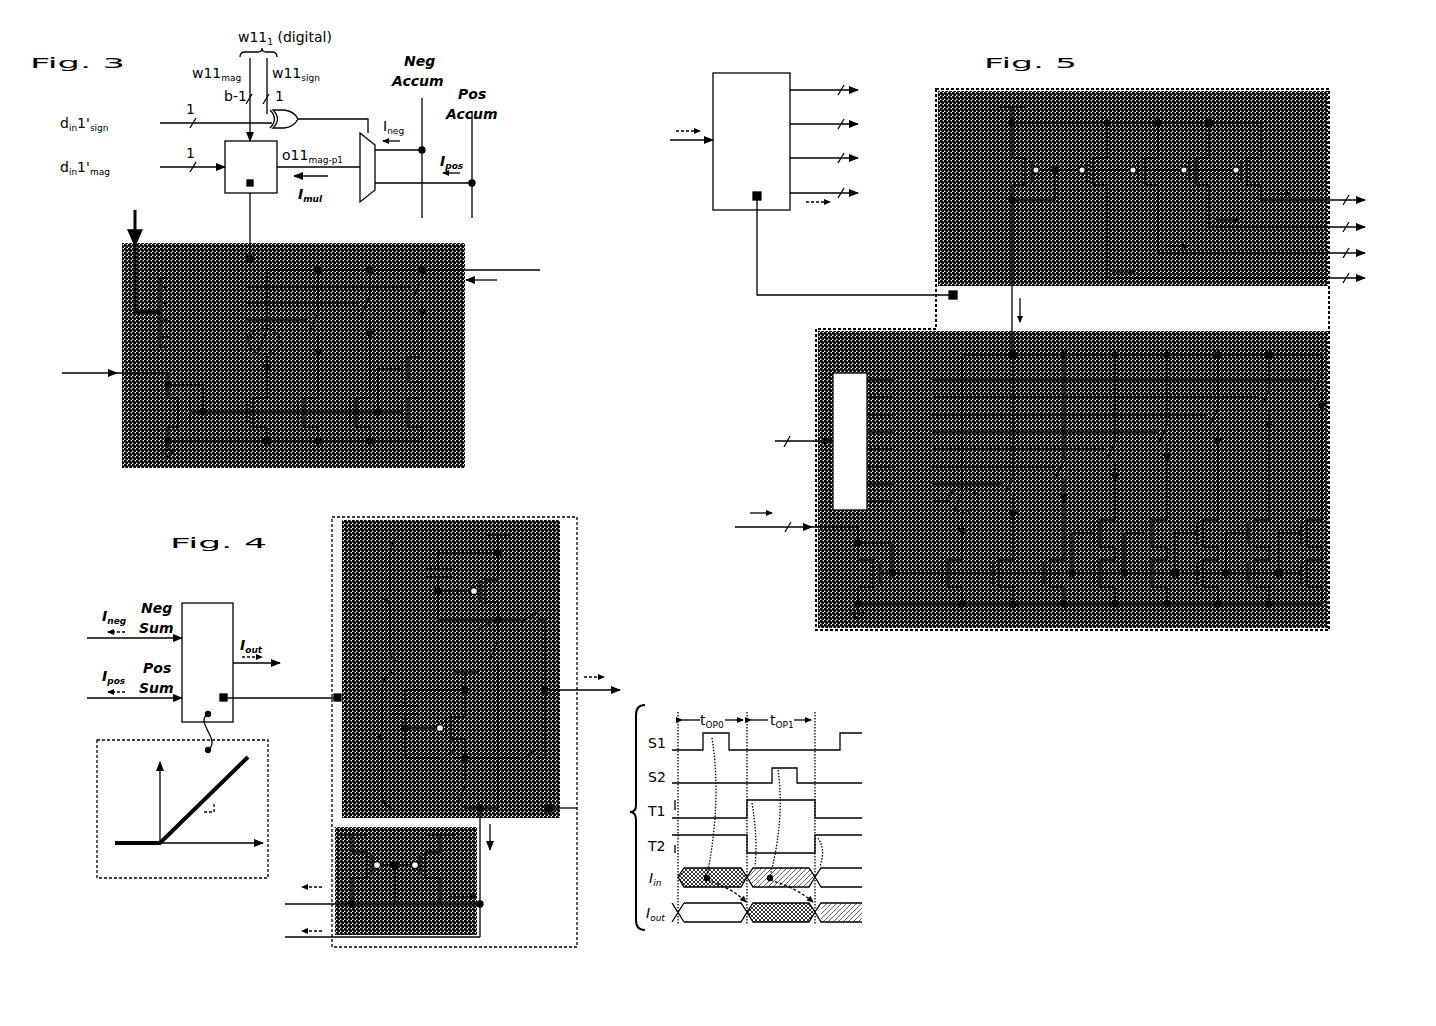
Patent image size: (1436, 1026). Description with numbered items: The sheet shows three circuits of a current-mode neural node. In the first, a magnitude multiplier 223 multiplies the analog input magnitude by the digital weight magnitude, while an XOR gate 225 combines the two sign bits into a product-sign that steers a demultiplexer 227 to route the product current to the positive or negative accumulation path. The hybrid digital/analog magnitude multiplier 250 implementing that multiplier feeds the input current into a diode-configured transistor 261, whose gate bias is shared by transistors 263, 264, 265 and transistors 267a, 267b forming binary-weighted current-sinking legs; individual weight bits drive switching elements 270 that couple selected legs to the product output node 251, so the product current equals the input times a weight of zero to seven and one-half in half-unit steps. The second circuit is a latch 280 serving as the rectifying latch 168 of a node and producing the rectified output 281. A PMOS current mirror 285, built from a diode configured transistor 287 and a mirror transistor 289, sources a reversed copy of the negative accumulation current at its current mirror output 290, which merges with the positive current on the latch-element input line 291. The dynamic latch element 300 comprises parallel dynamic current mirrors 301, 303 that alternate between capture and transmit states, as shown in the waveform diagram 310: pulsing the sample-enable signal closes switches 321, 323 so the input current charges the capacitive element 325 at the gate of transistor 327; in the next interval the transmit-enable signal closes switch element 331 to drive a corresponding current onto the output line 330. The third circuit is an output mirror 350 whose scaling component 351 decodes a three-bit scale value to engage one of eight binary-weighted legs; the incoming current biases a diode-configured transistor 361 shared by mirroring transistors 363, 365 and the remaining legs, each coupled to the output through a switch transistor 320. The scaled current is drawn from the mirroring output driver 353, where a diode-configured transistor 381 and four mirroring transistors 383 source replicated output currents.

In FIG. 3, the magnitude multiplier 223 is at (225, 183).
In FIG. 3, the XOR gate 225 is at (298, 126).
In FIG. 3, the demultiplexer 227 is at (358, 196).
In FIG. 3, the hybrid digital/analog magnitude multiplier 250 is at (300, 330).
In FIG. 3, the product output node 251 is at (428, 279).
In FIG. 3, the diode-configured transistor 261 is at (170, 419).
In FIG. 3, the transistor 263 is at (270, 426).
In FIG. 3, the transistor 264 is at (322, 426).
In FIG. 3, the transistor 265 is at (374, 426).
In FIG. 3, the transistor 267a is at (412, 384).
In FIG. 3, the transistor 267b is at (424, 419).
In FIG. 3, the switching elements 270 is at (248, 350).
In FIG. 4, the rectifying latch 168 is at (208, 603).
In FIG. 4, the rectified output 281 is at (182, 809).
In FIG. 4, the latch 280 is at (457, 732).
In FIG. 4, the PMOS current mirror 285 is at (406, 881).
In FIG. 4, the diode configured transistor 287 is at (358, 869).
In FIG. 4, the mirror transistor 289 is at (420, 852).
In FIG. 4, the current mirror output 290 is at (476, 906).
In FIG. 4, the latch-element input line 291 is at (482, 892).
In FIG. 4, the dynamic latch element 300 is at (486, 669).
In FIG. 4, the dynamic current mirror 301 is at (416, 740).
In FIG. 4, the dynamic current mirror 303 is at (438, 598).
In FIG. 4, the waveform diagram 310 is at (585, 799).
In FIG. 4, the switch 321 is at (469, 783).
In FIG. 4, the switch 323 is at (435, 758).
In FIG. 4, the capacitive element 325 is at (400, 704).
In FIG. 4, the transistor 327 is at (476, 728).
In FIG. 4, the output line 330 is at (544, 689).
In FIG. 4, the switch element 331 is at (505, 760).
In FIG. 5, the output mirror 350 is at (1036, 349).
In FIG. 5, the scaling component 351 is at (1012, 479).
In FIG. 5, the mirroring output driver 353 is at (1133, 223).
In FIG. 5, the diode-configured transistor 381 is at (1019, 239).
In FIG. 5, the mirroring transistors 383 is at (1108, 161).
In FIG. 5, the diode-configured transistor 361 is at (858, 573).
In FIG. 5, the mirroring transistor 363 is at (965, 562).
In FIG. 5, the mirroring transistor 365 is at (1016, 562).
In FIG. 5, the switch 320 is at (948, 507).